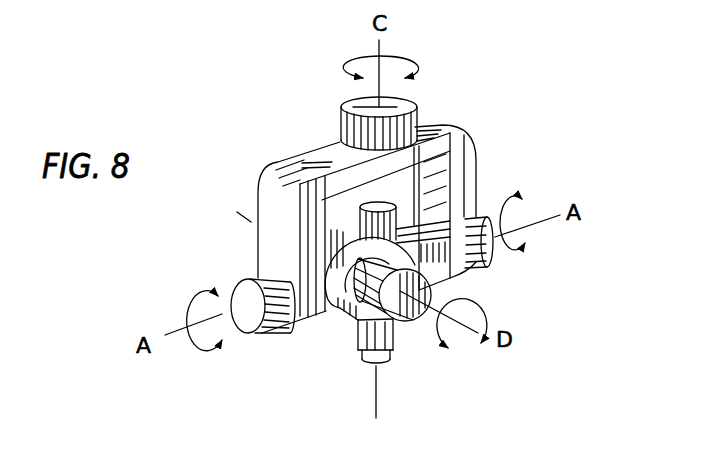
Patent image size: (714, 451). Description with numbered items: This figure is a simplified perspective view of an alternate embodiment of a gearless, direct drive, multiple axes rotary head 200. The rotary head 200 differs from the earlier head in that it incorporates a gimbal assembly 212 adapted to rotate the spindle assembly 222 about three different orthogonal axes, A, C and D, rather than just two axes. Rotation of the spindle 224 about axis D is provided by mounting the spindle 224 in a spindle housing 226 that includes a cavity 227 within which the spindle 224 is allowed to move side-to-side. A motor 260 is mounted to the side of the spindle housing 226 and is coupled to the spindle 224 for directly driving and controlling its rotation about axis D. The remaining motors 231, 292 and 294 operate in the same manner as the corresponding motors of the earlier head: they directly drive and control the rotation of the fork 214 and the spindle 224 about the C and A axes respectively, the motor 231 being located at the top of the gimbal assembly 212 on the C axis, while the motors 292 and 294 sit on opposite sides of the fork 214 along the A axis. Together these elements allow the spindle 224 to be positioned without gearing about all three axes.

The rotary head 200 is at (492, 140).
The gimbal assembly 212 is at (476, 152).
The fork 214 is at (473, 178).
The spindle assembly 222 is at (341, 322).
The spindle 224 is at (397, 343).
The spindle housing 226 is at (340, 293).
The cavity 227 is at (328, 212).
The motor 231 is at (417, 112).
The motor 260 is at (432, 292).
The motor 292 is at (485, 208).
The motor 294 is at (237, 289).